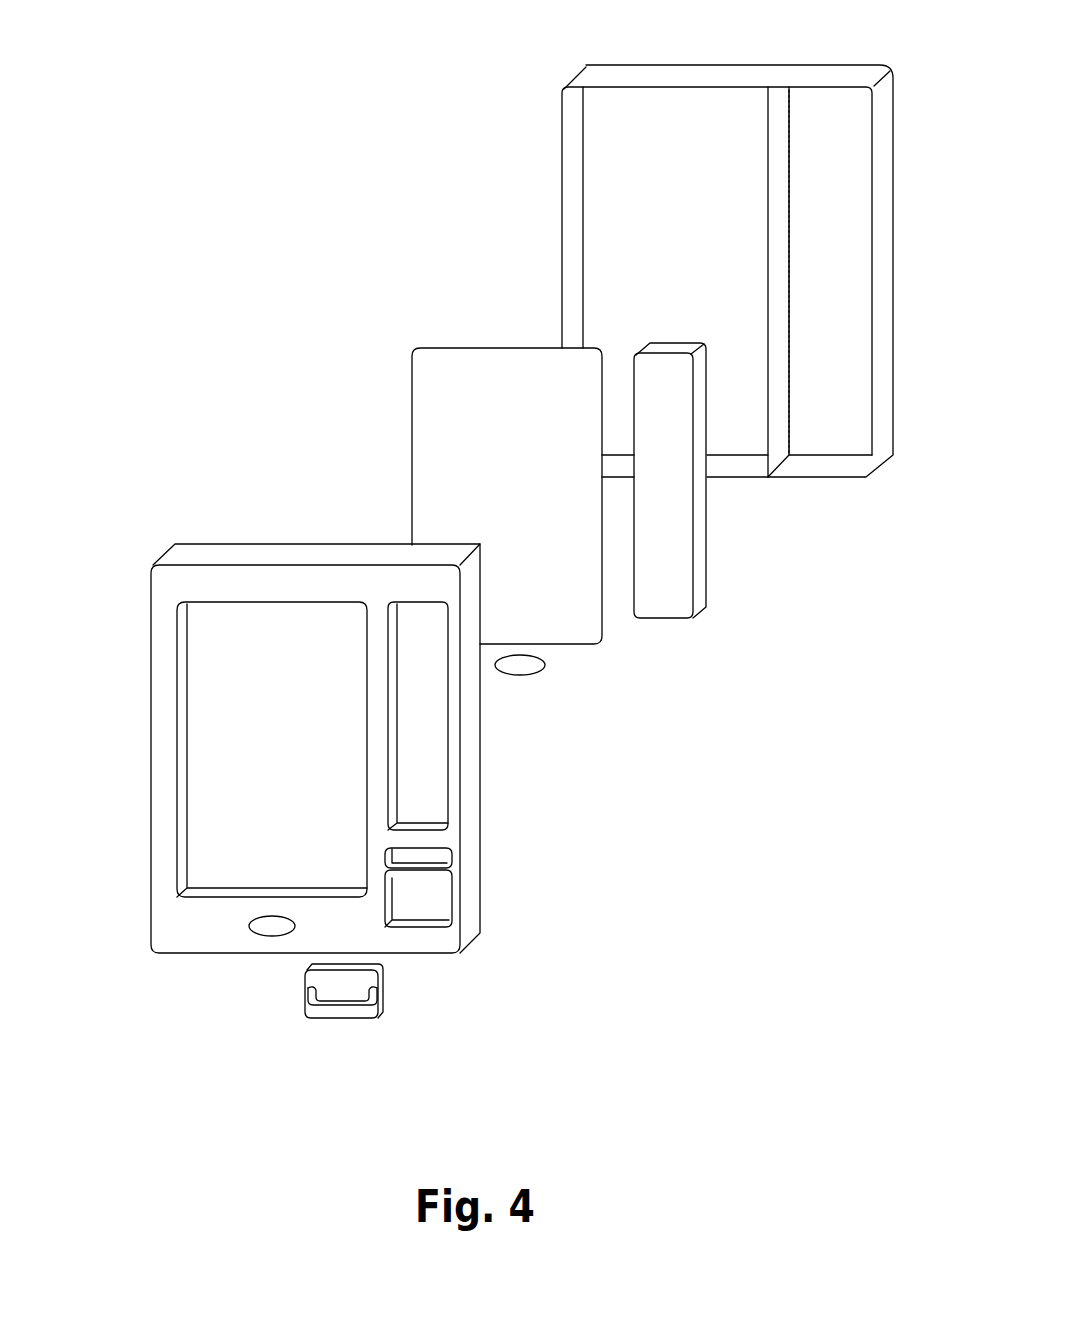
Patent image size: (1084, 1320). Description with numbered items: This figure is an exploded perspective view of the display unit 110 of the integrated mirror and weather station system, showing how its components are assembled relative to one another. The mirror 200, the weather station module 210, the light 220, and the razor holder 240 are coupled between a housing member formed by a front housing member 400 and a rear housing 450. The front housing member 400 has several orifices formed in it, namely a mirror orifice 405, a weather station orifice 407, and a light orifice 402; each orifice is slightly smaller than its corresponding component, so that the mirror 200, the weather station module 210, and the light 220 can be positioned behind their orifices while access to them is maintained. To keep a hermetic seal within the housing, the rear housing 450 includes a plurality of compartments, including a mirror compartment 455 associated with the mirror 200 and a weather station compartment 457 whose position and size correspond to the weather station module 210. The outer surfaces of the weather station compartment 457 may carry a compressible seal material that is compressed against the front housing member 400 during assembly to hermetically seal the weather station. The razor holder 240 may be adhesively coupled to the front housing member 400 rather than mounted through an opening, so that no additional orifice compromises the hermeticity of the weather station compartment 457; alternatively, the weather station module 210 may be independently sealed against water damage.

The display unit 110 is at (142, 120).
The mirror 200 is at (433, 355).
The weather station module 210 is at (682, 582).
The light 220 is at (545, 663).
The razor holder 240 is at (382, 1008).
The front housing member 400 is at (225, 566).
The light orifice 402 is at (273, 928).
The mirror orifice 405 is at (208, 737).
The weather station orifice 407 is at (418, 713).
The rear housing 450 is at (560, 168).
The mirror compartment 455 is at (685, 113).
The weather station compartment 457 is at (834, 124).